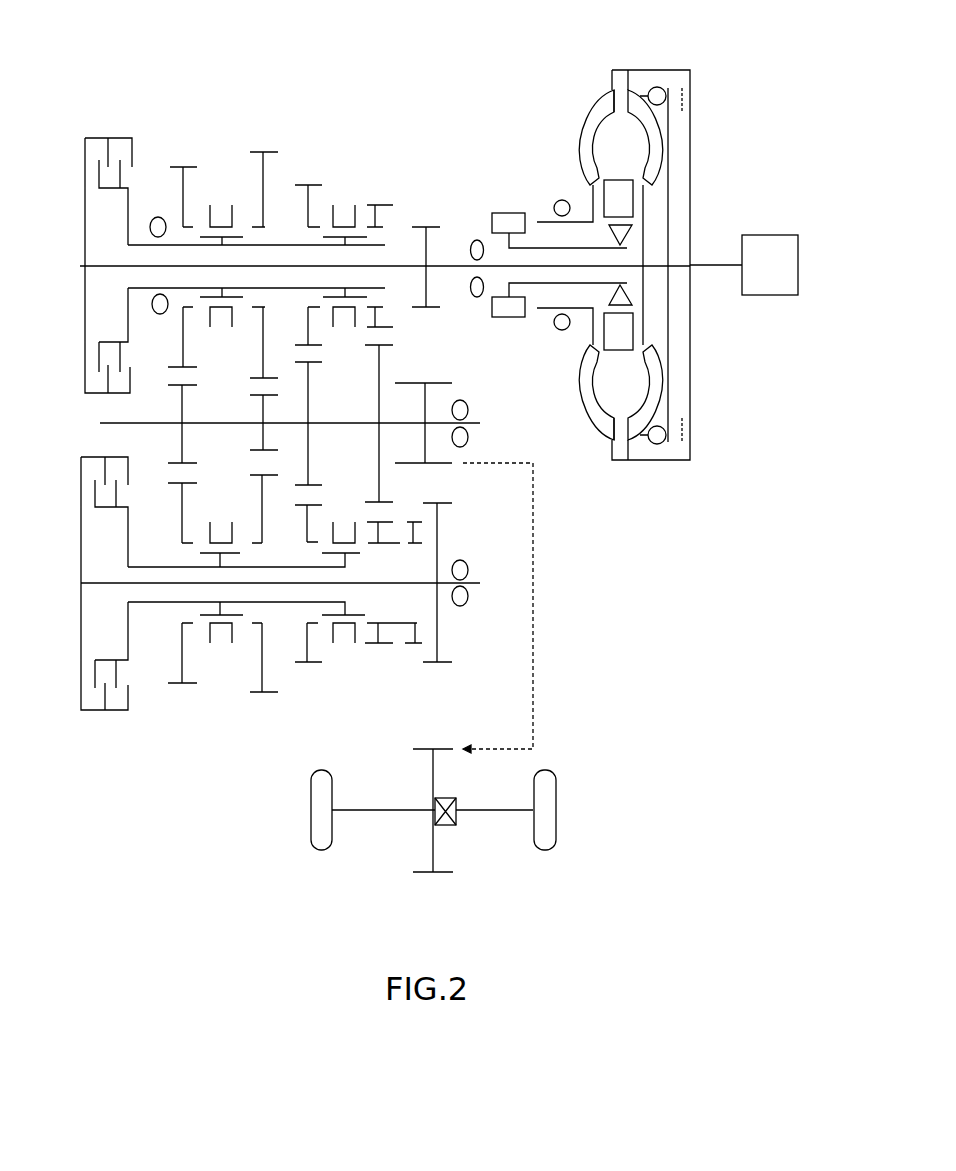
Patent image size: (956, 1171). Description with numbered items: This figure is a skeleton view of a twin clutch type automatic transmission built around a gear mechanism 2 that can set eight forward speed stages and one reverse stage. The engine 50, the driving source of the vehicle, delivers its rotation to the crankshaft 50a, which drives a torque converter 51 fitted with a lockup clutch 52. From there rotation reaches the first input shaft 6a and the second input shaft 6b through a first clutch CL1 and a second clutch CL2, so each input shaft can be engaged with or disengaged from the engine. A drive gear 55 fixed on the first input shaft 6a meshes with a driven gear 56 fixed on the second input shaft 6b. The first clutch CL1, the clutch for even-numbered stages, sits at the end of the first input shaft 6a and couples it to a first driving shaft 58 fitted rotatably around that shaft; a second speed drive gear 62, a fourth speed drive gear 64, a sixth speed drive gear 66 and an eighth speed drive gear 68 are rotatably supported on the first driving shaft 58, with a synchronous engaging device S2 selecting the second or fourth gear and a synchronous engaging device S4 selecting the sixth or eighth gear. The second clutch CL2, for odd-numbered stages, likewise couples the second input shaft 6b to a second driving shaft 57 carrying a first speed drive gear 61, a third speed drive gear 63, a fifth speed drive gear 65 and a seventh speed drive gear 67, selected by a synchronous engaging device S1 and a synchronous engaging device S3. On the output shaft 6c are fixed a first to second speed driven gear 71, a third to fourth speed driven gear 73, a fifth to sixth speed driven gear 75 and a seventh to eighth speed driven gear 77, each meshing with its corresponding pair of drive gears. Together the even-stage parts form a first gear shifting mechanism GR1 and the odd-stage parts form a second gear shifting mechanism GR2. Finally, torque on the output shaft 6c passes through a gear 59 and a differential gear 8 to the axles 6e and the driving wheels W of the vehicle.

The gear mechanism 2 is at (413, 100).
The first input shaft 6a is at (452, 265).
The second input shaft 6b is at (474, 583).
The output shaft 6c is at (468, 420).
The axle 6e is at (383, 810).
The differential gear 8 is at (445, 749).
The engine 50 is at (785, 235).
The crankshaft 50a is at (710, 265).
The torque converter 51 is at (643, 68).
The lockup clutch 52 is at (690, 98).
The drive gear 55 is at (426, 227).
The driven gear 56 is at (447, 503).
The second driving shaft 57 is at (275, 567).
The first driving shaft 58 is at (275, 243).
The gear 59 is at (437, 383).
The first speed drive gear 61 is at (378, 643).
The second speed drive gear 62 is at (388, 207).
The third speed drive gear 63 is at (310, 662).
The fourth speed drive gear 64 is at (308, 185).
The fifth speed drive gear 65 is at (185, 683).
The sixth speed drive gear 66 is at (185, 167).
The seventh speed drive gear 67 is at (265, 692).
The eighth speed drive gear 68 is at (263, 152).
The first to second speed driven gear 71 is at (381, 380).
The third to fourth speed driven gear 73 is at (310, 395).
The fifth to sixth speed driven gear 75 is at (185, 410).
The seventh to eighth speed driven gear 77 is at (265, 423).
The first clutch CL1 is at (100, 138).
The second clutch CL2 is at (100, 710).
The first gear shifting mechanism GR1 is at (208, 115).
The second gear shifting mechanism GR2 is at (225, 720).
The first to third speed synchronous engaging device S1 is at (343, 520).
The second to fourth speed synchronous engaging device S2 is at (343, 205).
The fifth to seventh speed synchronous engaging device S3 is at (218, 522).
The sixth to eighth speed synchronous engaging device S4 is at (222, 205).
The driving wheels W is at (311, 805).